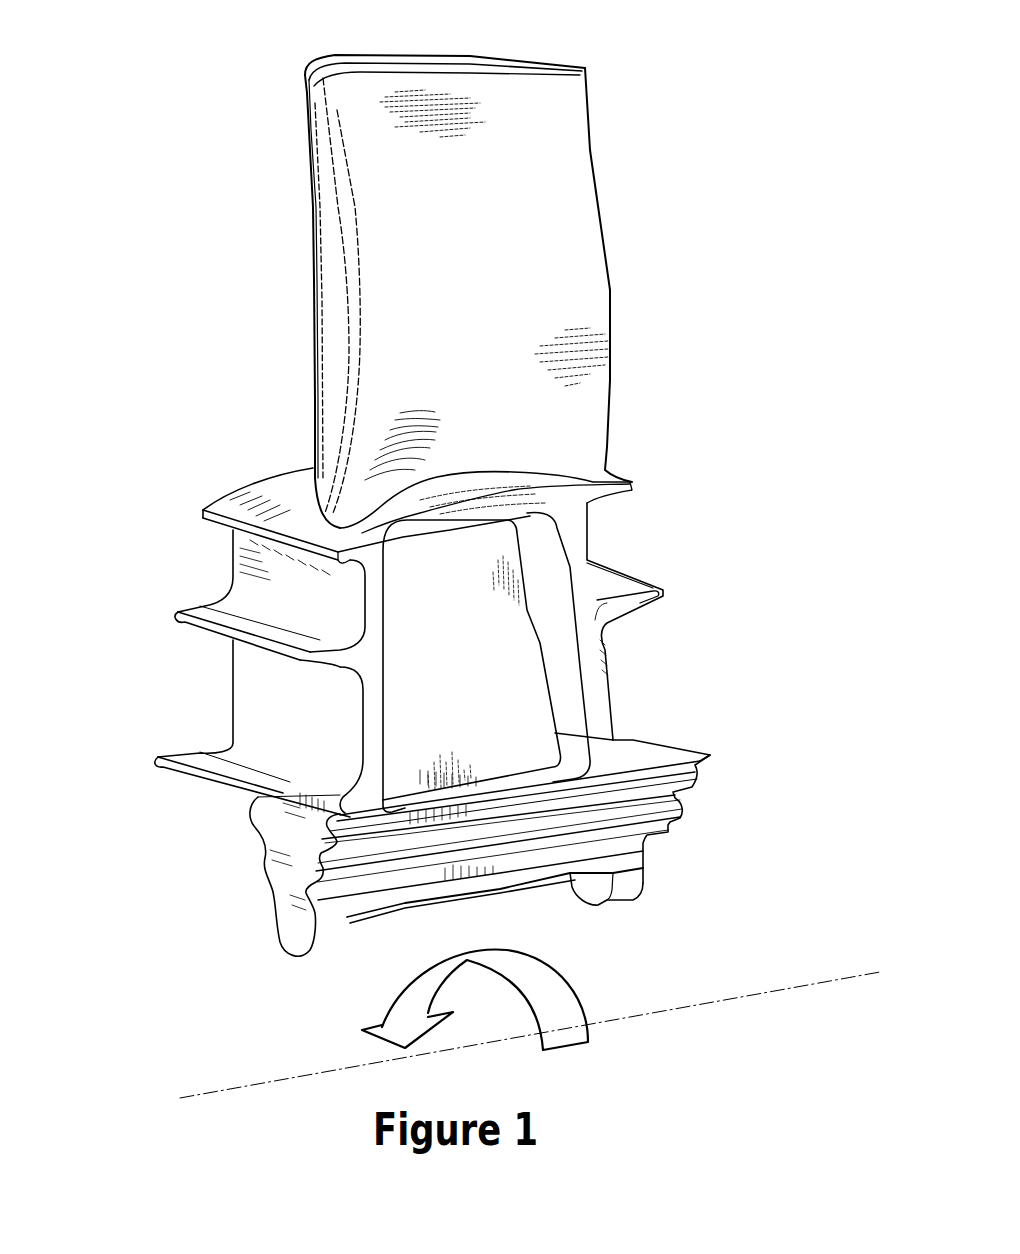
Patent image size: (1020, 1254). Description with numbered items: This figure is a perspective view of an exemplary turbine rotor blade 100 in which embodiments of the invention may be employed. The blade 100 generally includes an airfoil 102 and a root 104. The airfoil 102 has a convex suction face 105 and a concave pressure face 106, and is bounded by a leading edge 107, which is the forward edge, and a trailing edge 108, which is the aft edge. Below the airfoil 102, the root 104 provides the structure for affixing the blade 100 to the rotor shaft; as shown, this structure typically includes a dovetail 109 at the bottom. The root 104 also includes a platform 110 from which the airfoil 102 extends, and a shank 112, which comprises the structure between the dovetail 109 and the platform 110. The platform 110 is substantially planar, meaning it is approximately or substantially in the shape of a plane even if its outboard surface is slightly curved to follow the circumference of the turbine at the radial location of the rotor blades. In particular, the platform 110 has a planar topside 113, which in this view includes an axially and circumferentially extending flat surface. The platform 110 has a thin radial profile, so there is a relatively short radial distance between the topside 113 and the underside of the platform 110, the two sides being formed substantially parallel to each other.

The turbine rotor blade 100 is at (740, 336).
The airfoil 102 is at (565, 162).
The root 104 is at (740, 838).
The suction face 105 is at (280, 213).
The pressure face 106 is at (502, 338).
The leading edge 107 is at (335, 375).
The trailing edge 108 is at (607, 233).
The dovetail 109 is at (270, 946).
The platform 110 is at (242, 500).
The shank 112 is at (150, 694).
The topside 113 is at (308, 520).